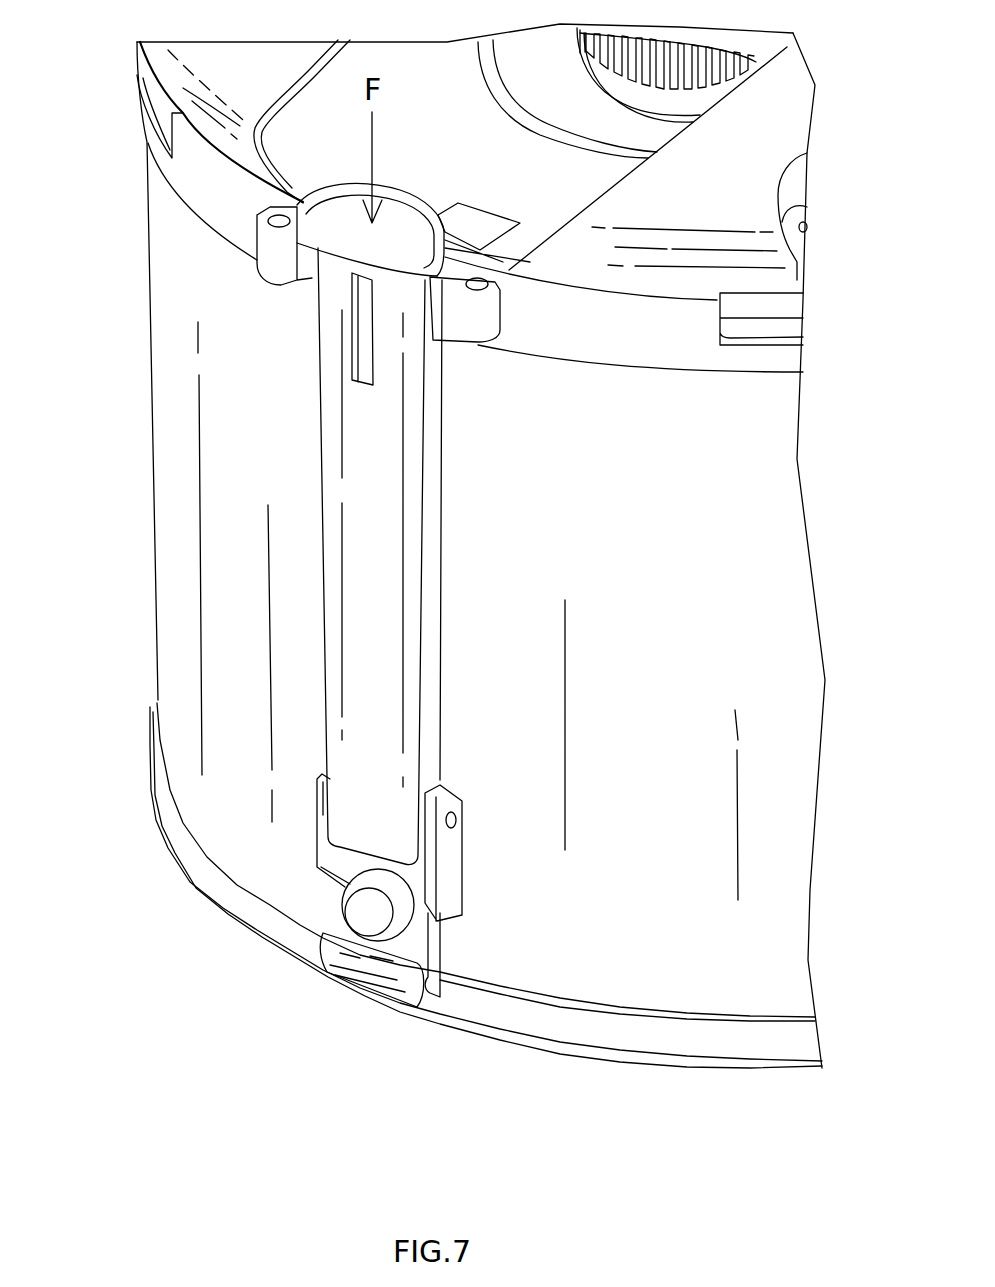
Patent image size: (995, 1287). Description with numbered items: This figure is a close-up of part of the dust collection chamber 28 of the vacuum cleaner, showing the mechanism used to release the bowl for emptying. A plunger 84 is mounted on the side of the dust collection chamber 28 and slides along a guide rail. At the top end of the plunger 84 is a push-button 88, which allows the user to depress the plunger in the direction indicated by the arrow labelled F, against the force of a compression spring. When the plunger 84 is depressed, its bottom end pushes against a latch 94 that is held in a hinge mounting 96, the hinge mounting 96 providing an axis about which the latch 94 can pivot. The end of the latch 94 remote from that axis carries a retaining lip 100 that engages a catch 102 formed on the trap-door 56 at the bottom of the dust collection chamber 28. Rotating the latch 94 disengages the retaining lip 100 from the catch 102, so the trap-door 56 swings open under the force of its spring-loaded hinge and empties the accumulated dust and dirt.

The dust collection chamber 28 is at (580, 557).
The trap-door 56 is at (424, 980).
The plunger 84 is at (360, 423).
The push-button 88 is at (323, 212).
The latch 94 is at (368, 912).
The hinge mounting 96 is at (322, 813).
The retaining lip 100 is at (462, 971).
The catch 102 is at (365, 957).